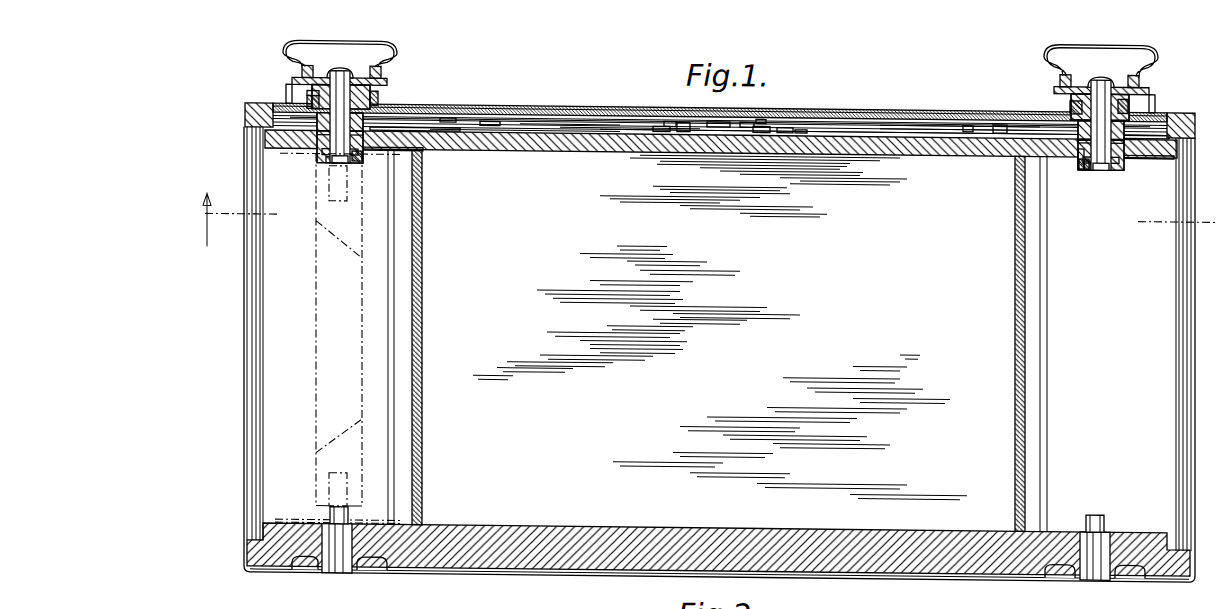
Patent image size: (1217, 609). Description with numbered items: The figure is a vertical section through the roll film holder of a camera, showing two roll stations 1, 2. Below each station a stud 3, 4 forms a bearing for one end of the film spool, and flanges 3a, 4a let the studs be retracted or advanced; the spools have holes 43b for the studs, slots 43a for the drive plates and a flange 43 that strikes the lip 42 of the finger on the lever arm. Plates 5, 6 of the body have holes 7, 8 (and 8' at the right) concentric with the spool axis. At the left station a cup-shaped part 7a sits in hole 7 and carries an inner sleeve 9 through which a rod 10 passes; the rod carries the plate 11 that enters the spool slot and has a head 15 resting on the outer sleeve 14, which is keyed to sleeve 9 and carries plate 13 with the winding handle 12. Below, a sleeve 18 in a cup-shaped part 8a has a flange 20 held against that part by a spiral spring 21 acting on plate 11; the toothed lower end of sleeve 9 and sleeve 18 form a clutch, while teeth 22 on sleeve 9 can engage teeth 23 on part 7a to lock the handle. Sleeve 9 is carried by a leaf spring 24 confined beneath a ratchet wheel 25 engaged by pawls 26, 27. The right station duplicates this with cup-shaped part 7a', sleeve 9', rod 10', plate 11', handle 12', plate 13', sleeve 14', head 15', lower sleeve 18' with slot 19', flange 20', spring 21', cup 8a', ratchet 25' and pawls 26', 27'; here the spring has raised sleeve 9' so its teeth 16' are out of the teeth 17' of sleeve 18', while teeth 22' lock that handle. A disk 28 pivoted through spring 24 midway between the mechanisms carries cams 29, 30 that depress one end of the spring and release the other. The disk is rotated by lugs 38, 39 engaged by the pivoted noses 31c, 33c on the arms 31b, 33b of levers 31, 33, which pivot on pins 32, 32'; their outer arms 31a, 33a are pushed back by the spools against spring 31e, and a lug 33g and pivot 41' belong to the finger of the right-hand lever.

The roll station 1 is at (259, 100).
The roll station 2 is at (701, 162).
The stud 3 is at (331, 508).
The flange 3a is at (336, 572).
The stud 4 is at (1102, 512).
The flange 4a is at (1102, 571).
The plate 5 is at (502, 105).
The plate 6 is at (578, 142).
The hole 7 is at (408, 106).
The cup-shaped part 7a is at (273, 71).
The cup-shaped part 7a' is at (1091, 93).
The hole 8 is at (402, 162).
The hole 8' is at (1148, 187).
The cup-shaped part 8a is at (423, 337).
The cup-shaped part 8a' is at (1042, 344).
The inner cylindrical sleeve 9 is at (350, 75).
The inner sleeve 9' is at (1120, 83).
The rod 10 is at (371, 90).
The rod 10' is at (1101, 90).
The plate 11 is at (320, 141).
The plate 11' is at (1100, 147).
The winding handle 12 is at (350, 48).
The winding handle 12' is at (1112, 57).
The plate 13 is at (360, 62).
The plate 13' is at (1122, 70).
The sleeve 14 is at (391, 94).
The sleeve 14' is at (1149, 101).
The head 15 is at (340, 63).
The head 15' is at (1097, 72).
The teeth 16' is at (1029, 183).
The teeth 17' is at (1042, 189).
The sleeve 18 is at (368, 168).
The sleeve 18' is at (1074, 187).
The slot 19' is at (1095, 170).
The flange 20 is at (315, 166).
The flange 20' is at (1106, 169).
The spiral spring 21 is at (325, 165).
The spiral spring 21' is at (1049, 197).
The teeth 22 is at (294, 96).
The teeth 22' is at (1051, 102).
The teeth 23 is at (307, 92).
The leaf spring 24 is at (530, 116).
The annular ratchet wheel 25 is at (291, 158).
The annular ratchet wheel 25' is at (1126, 170).
The pawl 26 is at (291, 130).
The pawl 26' is at (1057, 156).
The pawl 27 is at (424, 149).
The pawl 27' is at (1147, 160).
The disk 28 is at (752, 118).
The cam 29 is at (670, 119).
The cam 30 is at (765, 122).
The lever 31 is at (492, 130).
The arm 31a is at (452, 116).
The arm 31b is at (602, 124).
The pivoted nose 31c is at (660, 129).
The spring 31e is at (562, 124).
The pin 32 is at (494, 93).
The pin 32' is at (960, 107).
The lever 33 is at (893, 124).
The arm 33a is at (968, 129).
The arm 33b is at (800, 128).
The pivoted nose 33c is at (783, 128).
The lug 33g is at (998, 116).
The lug 38 is at (710, 124).
The lug 39 is at (760, 129).
The pivot 41' is at (975, 109).
The vertical lip 42 is at (330, 161).
The flange 43 is at (290, 155).
The slot 43a is at (350, 180).
The hole 43b is at (355, 495).